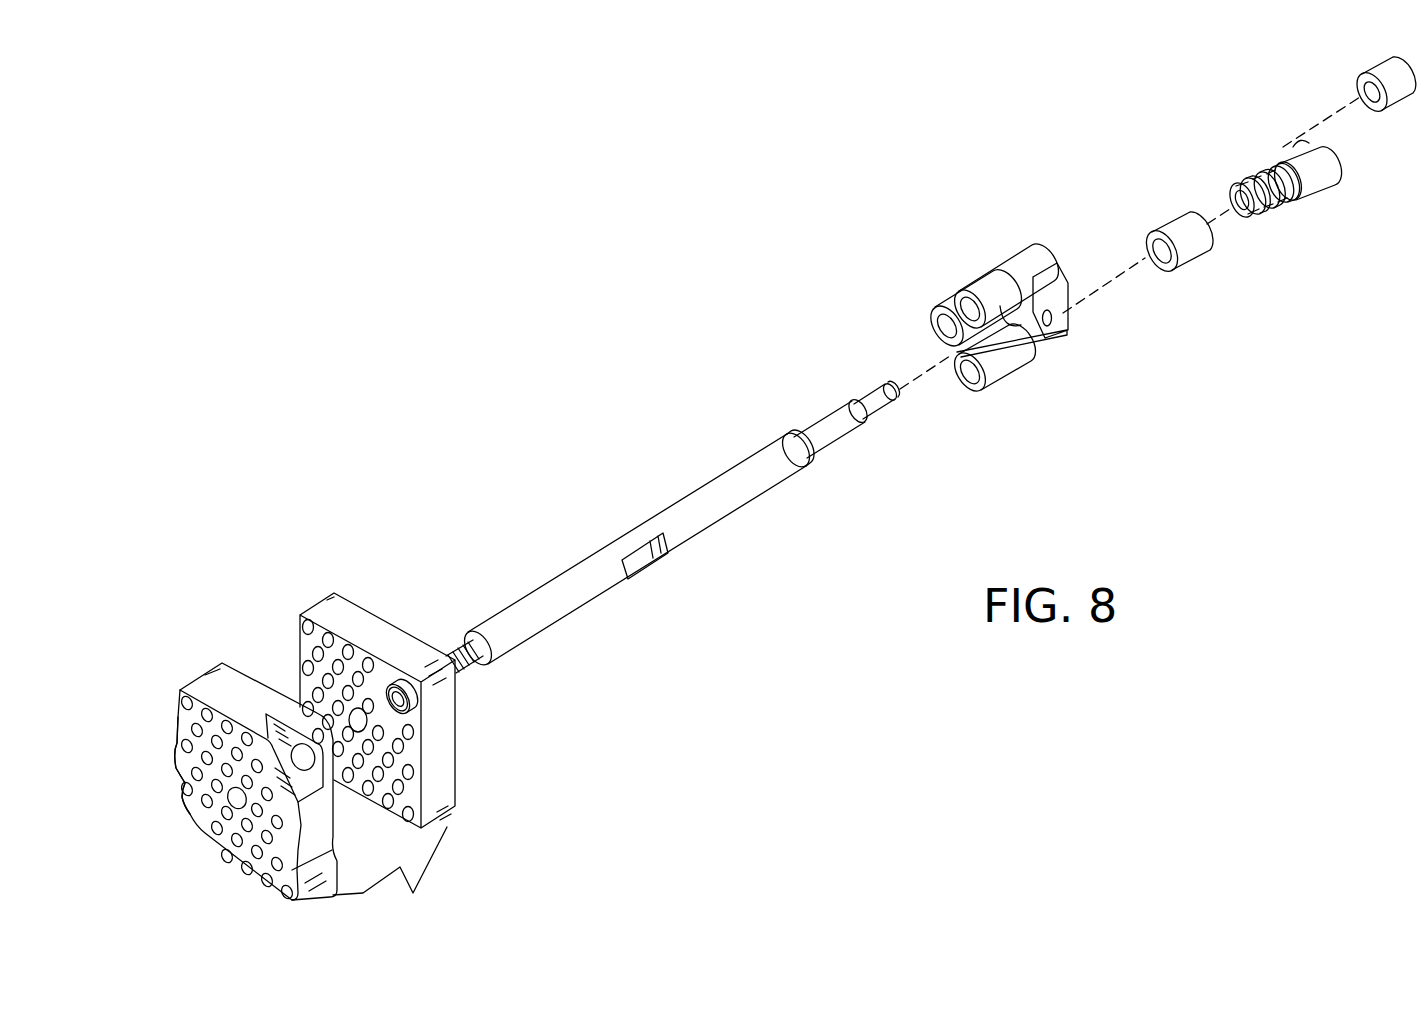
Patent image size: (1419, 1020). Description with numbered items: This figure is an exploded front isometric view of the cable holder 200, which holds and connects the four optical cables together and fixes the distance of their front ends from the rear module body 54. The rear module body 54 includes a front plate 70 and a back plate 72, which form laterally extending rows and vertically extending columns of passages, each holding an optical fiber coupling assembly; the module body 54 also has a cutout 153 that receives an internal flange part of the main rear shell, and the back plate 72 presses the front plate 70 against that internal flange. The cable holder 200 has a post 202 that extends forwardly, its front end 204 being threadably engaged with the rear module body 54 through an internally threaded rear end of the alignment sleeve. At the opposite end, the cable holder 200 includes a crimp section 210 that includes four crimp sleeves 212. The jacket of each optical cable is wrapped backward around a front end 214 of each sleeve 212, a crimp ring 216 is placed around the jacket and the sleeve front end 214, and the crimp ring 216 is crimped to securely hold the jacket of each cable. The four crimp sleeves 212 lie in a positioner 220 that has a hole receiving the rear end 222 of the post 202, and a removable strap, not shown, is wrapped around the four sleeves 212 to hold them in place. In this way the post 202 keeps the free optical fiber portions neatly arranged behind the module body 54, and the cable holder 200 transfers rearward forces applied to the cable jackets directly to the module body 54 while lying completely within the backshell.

The rear module body 54 is at (420, 882).
The front plate 70 is at (242, 754).
The back plate 72 is at (318, 602).
The cutout 153 is at (203, 832).
The cable holder 200 is at (931, 381).
The post 202 is at (707, 530).
The front end of the cable holder post 204 is at (467, 667).
The crimp section 210 is at (1148, 234).
The crimp sleeve 212 is at (1033, 256).
The front end of sleeve 214 is at (1243, 198).
The crimp ring 216 is at (1197, 243).
The positioner 220 is at (1068, 278).
The rear end of the post 222 is at (840, 433).